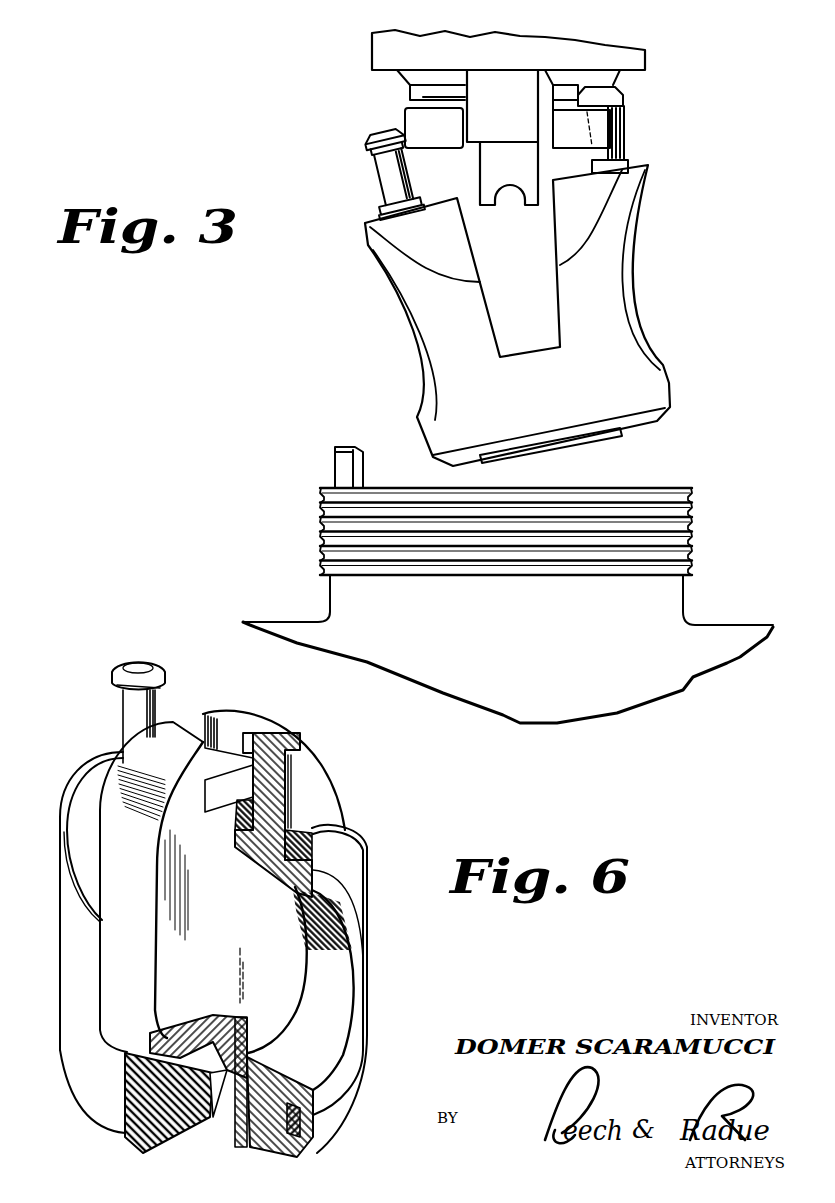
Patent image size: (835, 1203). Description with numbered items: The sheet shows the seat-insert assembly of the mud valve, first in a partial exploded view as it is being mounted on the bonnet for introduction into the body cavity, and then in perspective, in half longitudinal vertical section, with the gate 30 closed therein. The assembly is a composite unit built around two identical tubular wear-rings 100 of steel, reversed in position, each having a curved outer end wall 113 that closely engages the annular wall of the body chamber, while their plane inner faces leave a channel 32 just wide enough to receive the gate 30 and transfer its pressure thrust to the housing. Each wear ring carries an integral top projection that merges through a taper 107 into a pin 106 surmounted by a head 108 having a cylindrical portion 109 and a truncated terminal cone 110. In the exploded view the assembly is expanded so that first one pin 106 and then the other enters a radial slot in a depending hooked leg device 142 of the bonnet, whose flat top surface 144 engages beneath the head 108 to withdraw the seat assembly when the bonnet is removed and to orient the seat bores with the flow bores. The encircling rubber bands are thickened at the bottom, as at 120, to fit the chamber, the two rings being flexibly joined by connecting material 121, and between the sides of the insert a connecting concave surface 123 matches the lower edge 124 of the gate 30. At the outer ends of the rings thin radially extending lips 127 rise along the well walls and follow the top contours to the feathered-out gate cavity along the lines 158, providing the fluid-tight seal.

In FIG. 6, the gate 30 is at (257, 916).
In FIG. 3, the channel 32 is at (537, 283).
In FIG. 6, the tubular wear-ring 100 is at (343, 1030).
In FIG. 3, the pin 106 is at (622, 140).
In FIG. 6, the pin 106 is at (124, 718).
In FIG. 3, the taper 107 is at (380, 212).
In FIG. 3, the head 108 is at (354, 153).
In FIG. 3, the cylindrical portion 109 is at (364, 152).
In FIG. 3, the truncated terminal cone 110 is at (386, 130).
In FIG. 3, the curved outer end wall 113 is at (652, 352).
In FIG. 6, the curved outer end wall 113 is at (367, 1022).
In FIG. 6, the thickened material 120 is at (182, 1128).
In FIG. 3, the connecting material 121 is at (547, 382).
In FIG. 6, the connecting concave surface 123 is at (128, 1072).
In FIG. 6, the lower edge of the gate 124 is at (243, 962).
In FIG. 3, the lip 127 is at (640, 170).
In FIG. 6, the lip 127 is at (72, 787).
In FIG. 3, the hooked leg device 142 is at (453, 139).
In FIG. 3, the flat top surface 144 is at (423, 108).
In FIG. 3, the lines 158 is at (457, 279).
In FIG. 6, the lines 158 is at (83, 905).